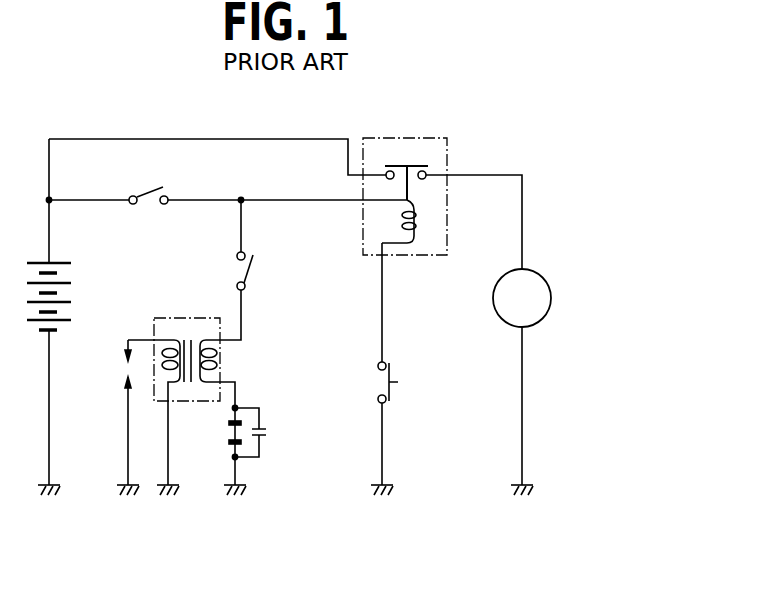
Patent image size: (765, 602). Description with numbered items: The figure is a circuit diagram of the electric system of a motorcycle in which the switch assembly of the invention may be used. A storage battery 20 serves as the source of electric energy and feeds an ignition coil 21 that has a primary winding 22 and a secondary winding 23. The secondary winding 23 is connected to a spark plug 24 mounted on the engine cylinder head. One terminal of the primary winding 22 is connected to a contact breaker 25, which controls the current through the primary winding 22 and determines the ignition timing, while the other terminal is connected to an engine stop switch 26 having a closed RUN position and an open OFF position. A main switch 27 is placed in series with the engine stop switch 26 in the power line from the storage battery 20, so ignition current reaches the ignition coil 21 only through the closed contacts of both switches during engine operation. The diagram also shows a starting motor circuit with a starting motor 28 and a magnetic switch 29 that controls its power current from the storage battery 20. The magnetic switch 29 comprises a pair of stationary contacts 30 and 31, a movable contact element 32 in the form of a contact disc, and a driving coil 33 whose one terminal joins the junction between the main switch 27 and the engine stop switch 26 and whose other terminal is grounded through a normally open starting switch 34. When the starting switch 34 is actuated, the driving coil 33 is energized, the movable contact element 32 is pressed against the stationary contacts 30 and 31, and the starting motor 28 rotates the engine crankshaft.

The storage battery 20 is at (78, 300).
The ignition coil 21 is at (190, 318).
The primary winding 22 is at (222, 363).
The secondary winding 23 is at (176, 384).
The spark plug 24 is at (120, 365).
The contact breaker 25 is at (270, 418).
The engine stop switch 26 is at (260, 270).
The main switch 27 is at (153, 186).
The starting motor 28 is at (549, 282).
The magnetic switch 29 is at (418, 260).
The stationary contact 30 is at (386, 170).
The stationary contact 31 is at (433, 172).
The movable contact element 32 is at (413, 162).
The driving coil 33 is at (420, 222).
The starting switch 34 is at (395, 383).